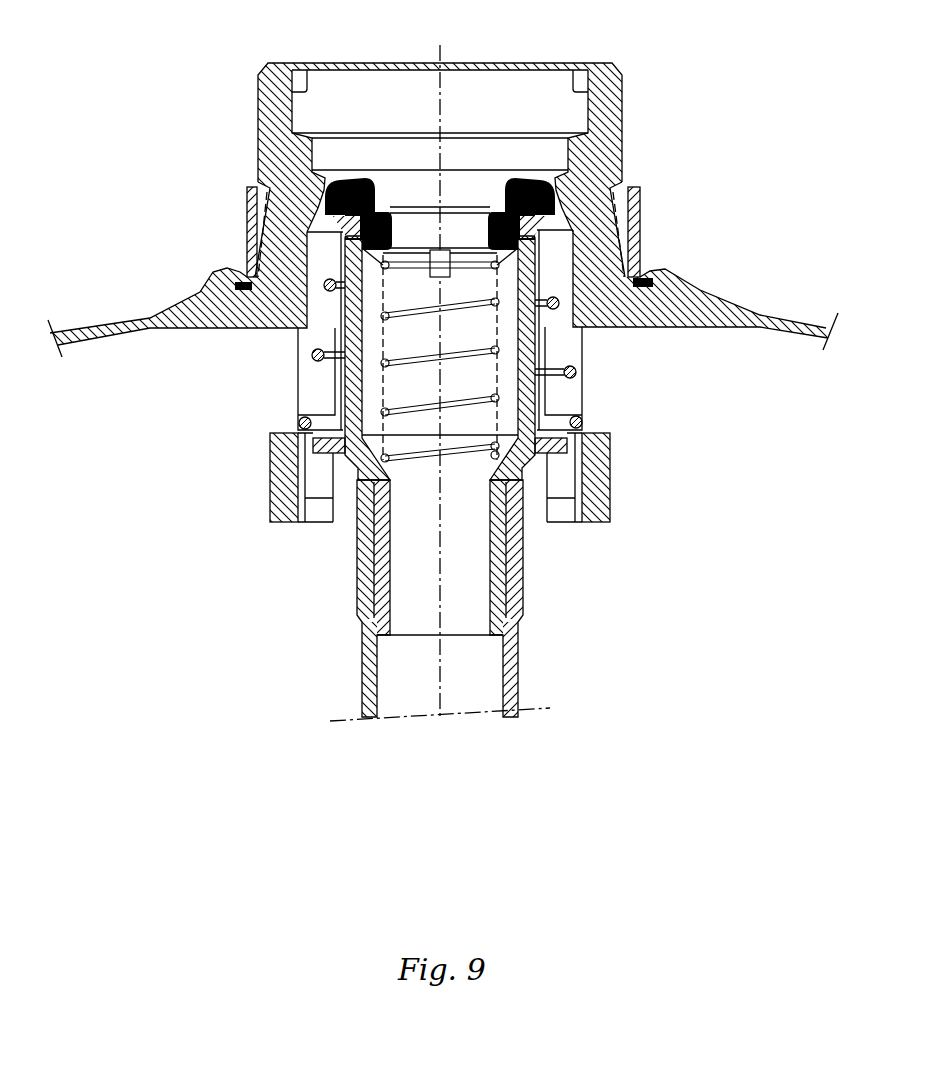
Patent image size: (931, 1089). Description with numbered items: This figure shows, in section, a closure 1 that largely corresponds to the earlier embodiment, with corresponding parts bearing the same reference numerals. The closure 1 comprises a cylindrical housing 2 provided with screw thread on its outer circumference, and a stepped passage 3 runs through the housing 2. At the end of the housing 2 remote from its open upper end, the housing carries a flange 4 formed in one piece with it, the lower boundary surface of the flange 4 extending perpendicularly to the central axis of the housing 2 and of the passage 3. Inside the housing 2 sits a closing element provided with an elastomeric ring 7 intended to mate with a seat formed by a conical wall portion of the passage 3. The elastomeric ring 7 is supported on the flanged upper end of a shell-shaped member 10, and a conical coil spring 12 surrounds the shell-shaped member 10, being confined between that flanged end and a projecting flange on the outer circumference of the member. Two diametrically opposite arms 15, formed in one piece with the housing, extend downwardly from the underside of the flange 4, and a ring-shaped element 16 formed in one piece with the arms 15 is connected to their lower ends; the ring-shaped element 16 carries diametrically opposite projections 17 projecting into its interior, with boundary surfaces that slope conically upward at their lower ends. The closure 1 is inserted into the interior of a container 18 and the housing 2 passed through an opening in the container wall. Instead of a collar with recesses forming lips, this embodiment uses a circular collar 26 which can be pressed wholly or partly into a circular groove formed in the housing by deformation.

The closure 1 is at (288, 652).
The cylindrical housing 2 is at (625, 108).
The stepped passage 3 is at (332, 82).
The flange 4 is at (176, 336).
The elastomeric ring 7 is at (531, 184).
The shell-shaped member 10 is at (343, 385).
The coil spring 12 is at (580, 379).
The arms 15 is at (580, 351).
The ring-shaped element 16 is at (272, 489).
The projections 17 is at (566, 500).
The container 18 is at (772, 321).
The circular collar 26 is at (641, 198).